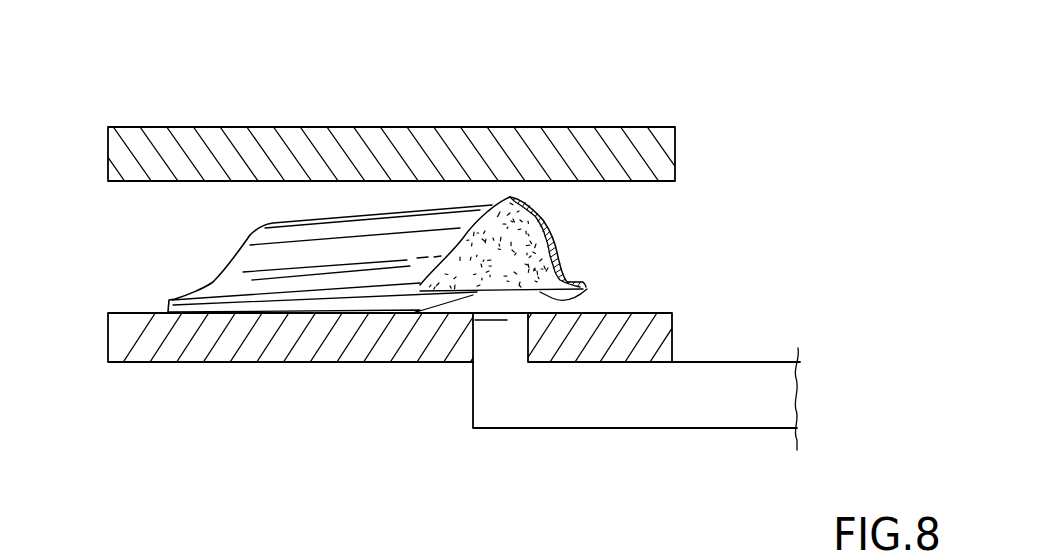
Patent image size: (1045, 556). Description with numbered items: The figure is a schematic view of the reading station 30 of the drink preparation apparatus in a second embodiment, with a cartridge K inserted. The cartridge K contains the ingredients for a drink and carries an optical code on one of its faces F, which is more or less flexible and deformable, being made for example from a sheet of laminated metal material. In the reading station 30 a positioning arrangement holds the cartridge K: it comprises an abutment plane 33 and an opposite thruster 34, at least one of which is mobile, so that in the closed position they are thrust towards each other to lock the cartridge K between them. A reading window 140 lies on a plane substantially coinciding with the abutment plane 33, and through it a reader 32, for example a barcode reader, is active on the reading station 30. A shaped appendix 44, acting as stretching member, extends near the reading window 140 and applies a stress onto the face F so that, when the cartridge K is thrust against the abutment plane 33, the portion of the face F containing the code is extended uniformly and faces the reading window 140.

The reading station 30 is at (652, 92).
The thruster 34 is at (120, 140).
The abutment plane 33 is at (140, 343).
The reader 32 is at (582, 413).
The reading window 140 is at (507, 322).
The cartridge K is at (267, 260).
The shaped appendix 44 is at (476, 306).
The face F is at (587, 289).